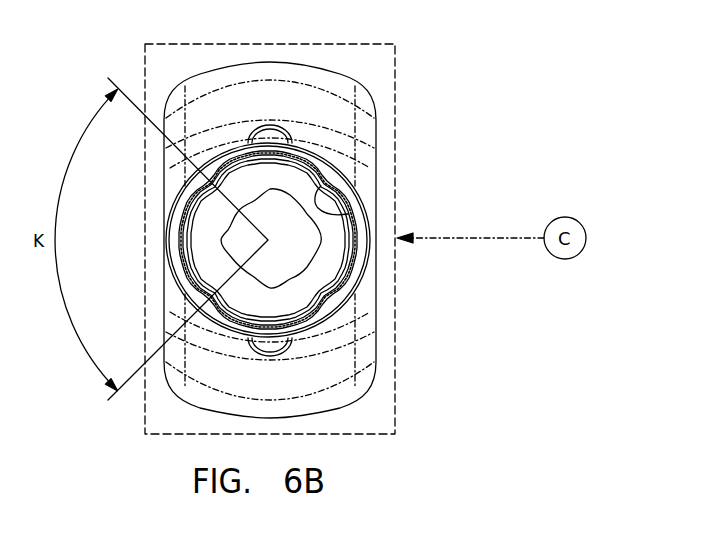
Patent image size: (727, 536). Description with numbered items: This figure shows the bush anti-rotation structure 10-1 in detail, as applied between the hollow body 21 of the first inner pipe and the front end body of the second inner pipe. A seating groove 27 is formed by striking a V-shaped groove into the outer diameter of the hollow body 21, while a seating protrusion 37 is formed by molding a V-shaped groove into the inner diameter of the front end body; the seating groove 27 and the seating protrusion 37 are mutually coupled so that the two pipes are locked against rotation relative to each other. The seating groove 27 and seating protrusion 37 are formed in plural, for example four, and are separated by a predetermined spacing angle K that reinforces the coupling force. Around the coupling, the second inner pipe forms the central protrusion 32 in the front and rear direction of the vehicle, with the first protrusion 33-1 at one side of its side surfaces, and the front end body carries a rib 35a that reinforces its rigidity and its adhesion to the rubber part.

The bush anti-rotation structure 10-1 is at (342, 240).
The hollow body 21 is at (303, 285).
The seating groove 27 is at (348, 214).
The central protrusion 32 is at (322, 395).
The first protrusion 33-1 is at (333, 302).
The rib 35a is at (283, 359).
The seating protrusion 37 is at (335, 165).